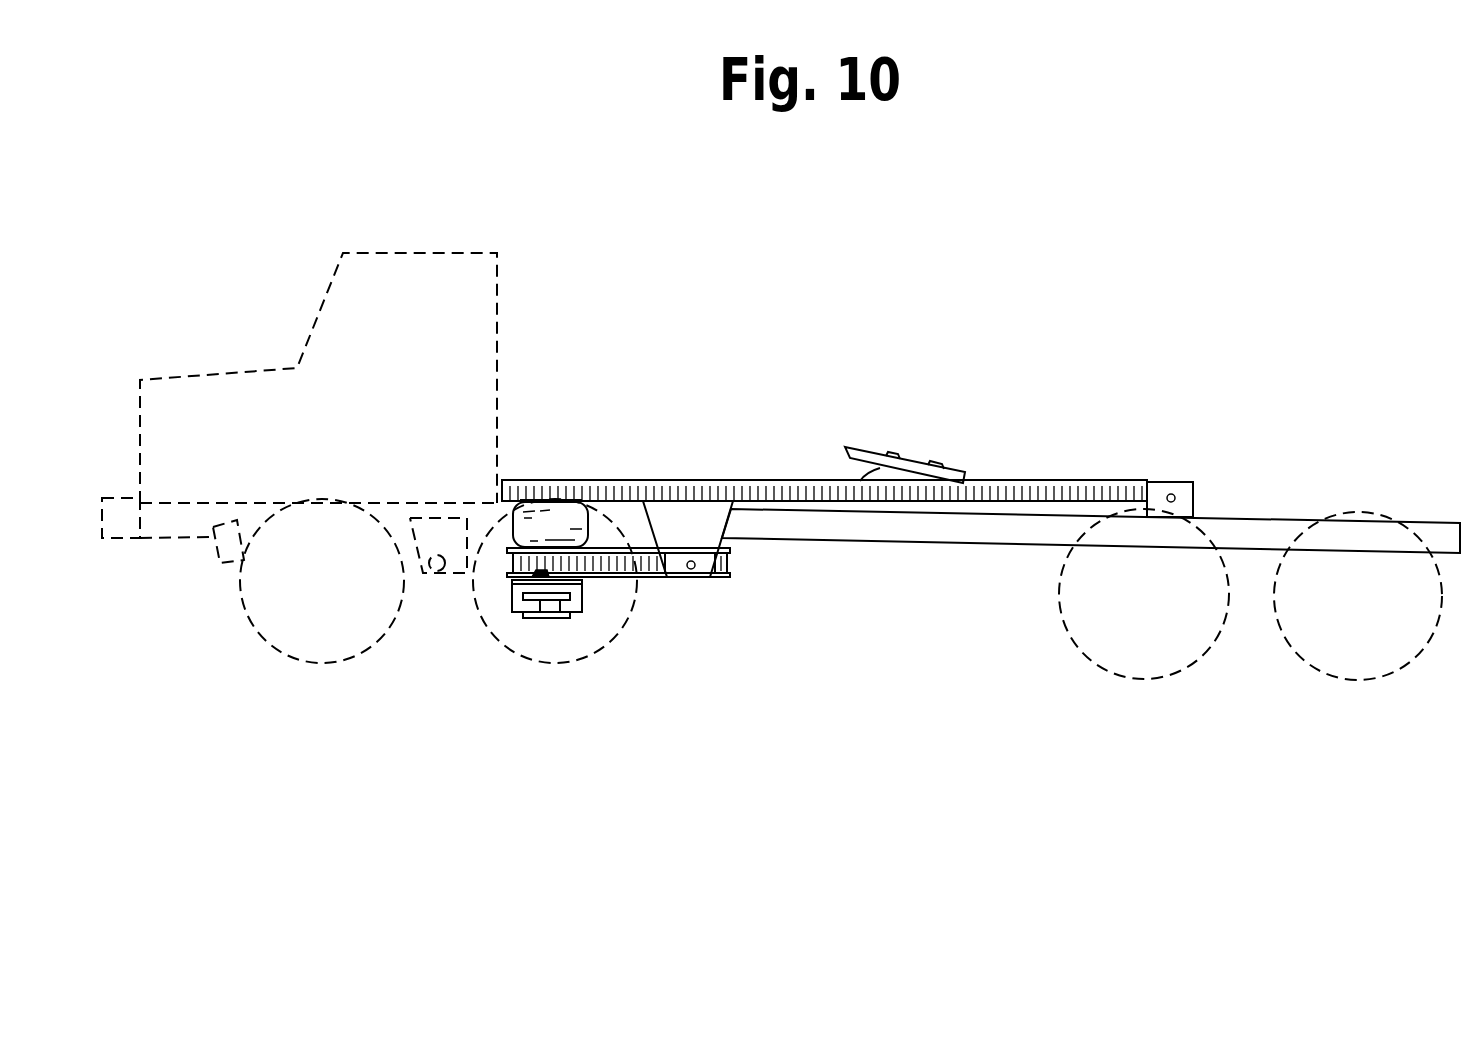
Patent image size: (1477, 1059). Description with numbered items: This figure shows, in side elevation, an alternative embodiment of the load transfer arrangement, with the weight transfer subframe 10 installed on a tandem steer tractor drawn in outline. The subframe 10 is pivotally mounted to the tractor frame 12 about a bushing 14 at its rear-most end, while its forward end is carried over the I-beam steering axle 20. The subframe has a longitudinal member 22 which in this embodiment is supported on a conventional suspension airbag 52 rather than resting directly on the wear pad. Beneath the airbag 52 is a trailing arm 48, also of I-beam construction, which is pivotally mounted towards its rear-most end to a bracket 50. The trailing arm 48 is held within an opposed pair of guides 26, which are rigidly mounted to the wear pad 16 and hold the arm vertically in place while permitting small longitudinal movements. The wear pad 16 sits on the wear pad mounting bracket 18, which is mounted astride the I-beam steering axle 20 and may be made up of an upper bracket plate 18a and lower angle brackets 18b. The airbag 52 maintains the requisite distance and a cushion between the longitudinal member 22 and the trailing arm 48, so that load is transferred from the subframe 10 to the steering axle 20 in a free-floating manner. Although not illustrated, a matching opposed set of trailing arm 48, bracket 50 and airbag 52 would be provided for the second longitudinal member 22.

The subframe 10 is at (745, 468).
The tractor frame 12 is at (837, 530).
The bushing 14 is at (1176, 497).
The wear pad 16 is at (533, 573).
The wear pad mounting bracket 18 is at (553, 674).
The upper bracket plate 18a is at (582, 585).
The lower angle brackets 18b is at (573, 602).
The I-beam steering axle 20 is at (548, 610).
The longitudinal member 22 is at (1003, 492).
The guides 26 is at (513, 583).
The trailing arm 48 is at (597, 570).
The bracket 50 is at (700, 520).
The suspension airbag 52 is at (557, 517).